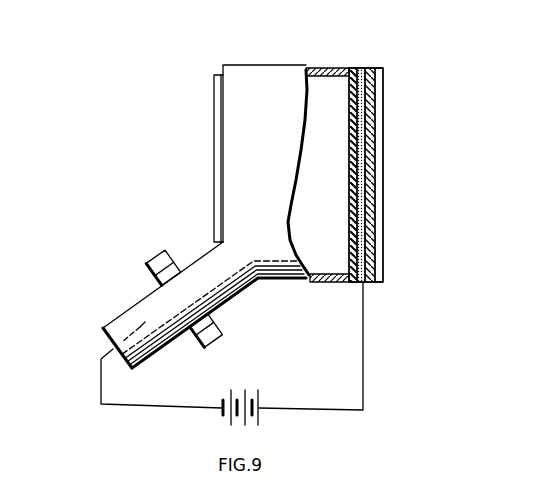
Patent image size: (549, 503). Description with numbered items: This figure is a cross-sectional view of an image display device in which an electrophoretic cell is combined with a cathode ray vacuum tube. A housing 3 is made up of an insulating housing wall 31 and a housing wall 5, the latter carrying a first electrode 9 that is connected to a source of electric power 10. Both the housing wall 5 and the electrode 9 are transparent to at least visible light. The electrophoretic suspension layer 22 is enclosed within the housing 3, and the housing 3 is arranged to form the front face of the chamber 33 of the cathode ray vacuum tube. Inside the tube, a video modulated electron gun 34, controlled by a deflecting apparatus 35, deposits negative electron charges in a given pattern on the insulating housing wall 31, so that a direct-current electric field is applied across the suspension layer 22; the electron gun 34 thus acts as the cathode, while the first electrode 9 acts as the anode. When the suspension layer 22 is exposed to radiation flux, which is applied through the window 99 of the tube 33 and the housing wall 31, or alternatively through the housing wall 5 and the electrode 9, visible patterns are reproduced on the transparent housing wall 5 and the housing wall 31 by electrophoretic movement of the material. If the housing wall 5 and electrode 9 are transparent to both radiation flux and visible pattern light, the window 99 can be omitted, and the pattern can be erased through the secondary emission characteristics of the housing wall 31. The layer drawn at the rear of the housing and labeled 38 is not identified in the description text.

The housing 3 is at (400, 87).
The housing wall 5 is at (385, 69).
The first electrode 9 is at (371, 68).
The source of electric power 10 is at (221, 415).
The electrophoretic suspension layer 22 is at (376, 240).
The insulating housing wall 31 is at (354, 68).
The chamber of cathode ray vacuum tube 33 is at (271, 57).
The video modulated electron gun 34 is at (145, 322).
The deflecting apparatus 35 is at (158, 250).
The rear electrode 38 is at (363, 68).
The window 99 is at (215, 112).